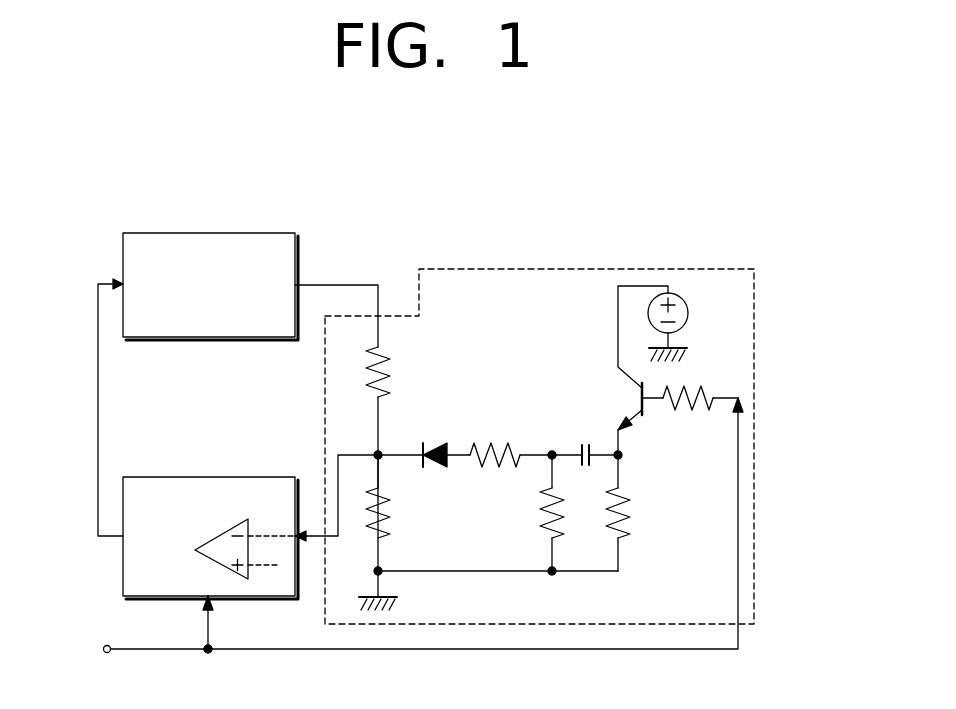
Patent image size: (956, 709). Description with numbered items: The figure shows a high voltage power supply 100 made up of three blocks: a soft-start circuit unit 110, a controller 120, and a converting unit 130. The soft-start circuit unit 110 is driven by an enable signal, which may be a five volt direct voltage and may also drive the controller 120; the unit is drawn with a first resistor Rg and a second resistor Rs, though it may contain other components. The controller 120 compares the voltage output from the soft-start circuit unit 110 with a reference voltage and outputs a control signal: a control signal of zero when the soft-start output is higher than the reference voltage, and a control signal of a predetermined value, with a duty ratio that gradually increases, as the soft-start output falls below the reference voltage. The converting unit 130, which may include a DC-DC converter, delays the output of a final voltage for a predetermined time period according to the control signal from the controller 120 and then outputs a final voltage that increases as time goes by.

The high voltage power supply 100 is at (419, 155).
The soft-start circuit unit 110 is at (754, 269).
The controller 120 is at (217, 477).
The converting unit 130 is at (123, 233).